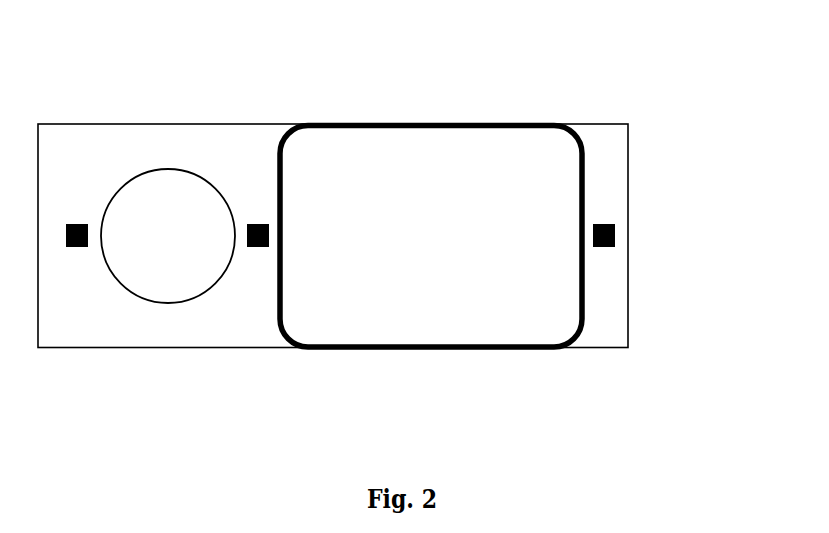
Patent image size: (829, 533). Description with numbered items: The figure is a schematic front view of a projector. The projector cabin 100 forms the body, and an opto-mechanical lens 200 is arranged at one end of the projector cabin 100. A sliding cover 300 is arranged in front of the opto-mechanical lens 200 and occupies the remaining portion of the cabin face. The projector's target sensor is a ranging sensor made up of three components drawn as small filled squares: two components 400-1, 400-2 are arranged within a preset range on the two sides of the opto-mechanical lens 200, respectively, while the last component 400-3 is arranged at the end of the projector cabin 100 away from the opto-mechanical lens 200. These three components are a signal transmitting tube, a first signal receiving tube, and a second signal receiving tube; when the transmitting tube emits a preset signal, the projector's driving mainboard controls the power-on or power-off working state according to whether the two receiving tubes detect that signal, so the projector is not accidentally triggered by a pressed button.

The projector cabin 100 is at (333, 177).
The opto-mechanical lens 200 is at (182, 300).
The sliding cover 300 is at (431, 279).
The component of the target sensor 400-1 is at (116, 332).
The component of the target sensor 400-2 is at (312, 134).
The component of the target sensor 400-3 is at (674, 190).